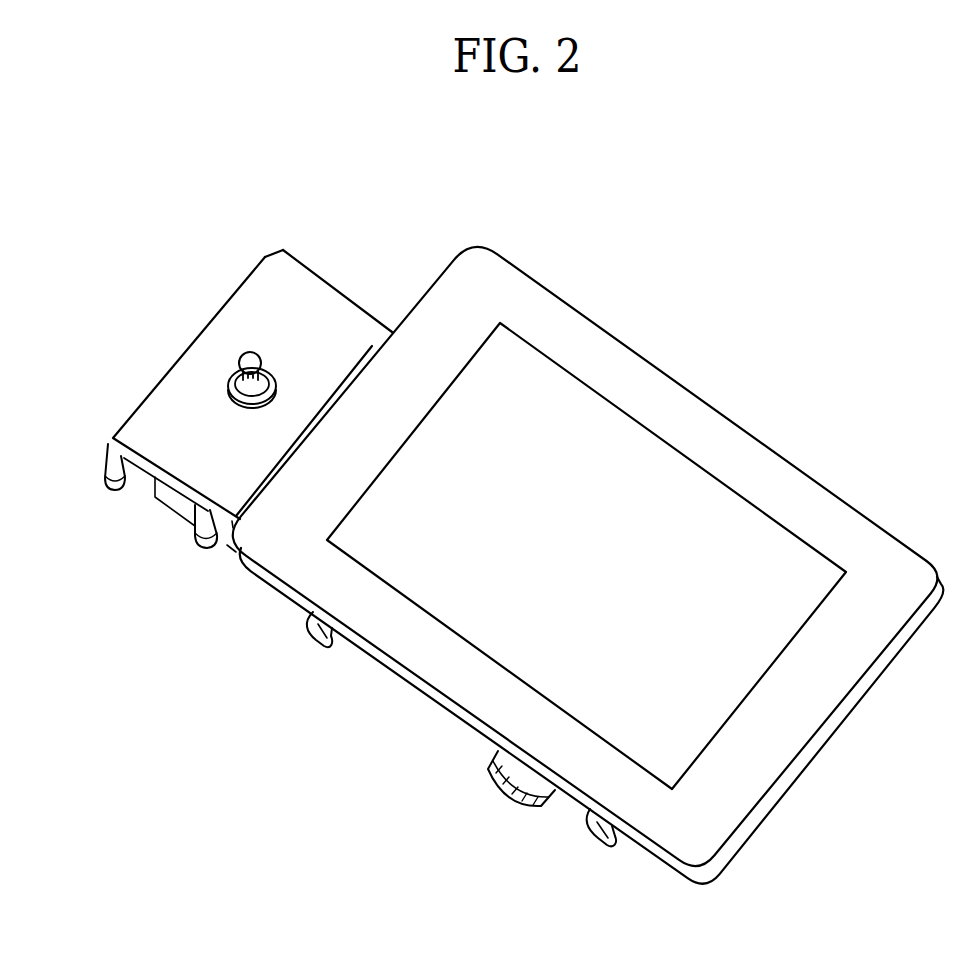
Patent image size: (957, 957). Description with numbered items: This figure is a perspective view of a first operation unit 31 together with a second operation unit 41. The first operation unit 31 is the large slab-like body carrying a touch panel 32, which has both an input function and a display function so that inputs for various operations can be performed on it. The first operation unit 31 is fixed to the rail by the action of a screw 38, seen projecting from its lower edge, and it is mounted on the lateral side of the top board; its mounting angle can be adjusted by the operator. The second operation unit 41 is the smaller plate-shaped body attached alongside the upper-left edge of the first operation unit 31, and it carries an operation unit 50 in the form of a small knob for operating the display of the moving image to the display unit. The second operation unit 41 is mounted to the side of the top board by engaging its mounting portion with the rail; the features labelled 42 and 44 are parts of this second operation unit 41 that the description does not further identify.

The first operation unit 31 is at (704, 365).
The touch panel 32 is at (720, 526).
The screw 38 is at (507, 792).
The second operation unit 41 is at (344, 258).
The mounting plate 42 is at (211, 322).
The engagement tab 44 is at (281, 287).
The operation unit 50 is at (272, 354).